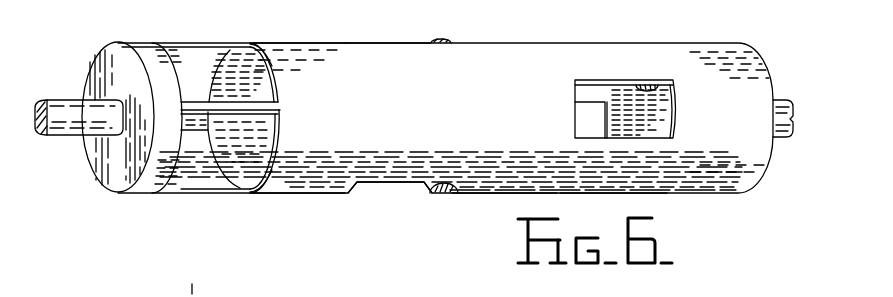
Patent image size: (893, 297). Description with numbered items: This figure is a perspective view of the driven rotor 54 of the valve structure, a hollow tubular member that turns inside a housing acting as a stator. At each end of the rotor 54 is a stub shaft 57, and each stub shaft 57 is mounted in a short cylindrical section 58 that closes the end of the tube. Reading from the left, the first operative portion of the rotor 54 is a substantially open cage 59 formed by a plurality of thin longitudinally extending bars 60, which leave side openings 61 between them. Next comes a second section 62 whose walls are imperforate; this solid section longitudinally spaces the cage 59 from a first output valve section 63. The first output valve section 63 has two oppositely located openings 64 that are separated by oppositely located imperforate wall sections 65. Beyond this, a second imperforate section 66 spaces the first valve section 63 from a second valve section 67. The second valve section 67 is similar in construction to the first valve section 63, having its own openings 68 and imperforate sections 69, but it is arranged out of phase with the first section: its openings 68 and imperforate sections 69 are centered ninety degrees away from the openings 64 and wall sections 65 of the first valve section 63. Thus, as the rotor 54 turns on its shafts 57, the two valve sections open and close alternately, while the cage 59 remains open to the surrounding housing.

The driven rotor 54 is at (504, 35).
The stub shaft 57 is at (46, 100).
The short cylindrical section 58 is at (134, 43).
The open cage 59 is at (247, 195).
The longitudinally extending bars 60 is at (187, 43).
The side openings 61 is at (251, 68).
The second section 62 is at (348, 193).
The first output valve section 63 is at (425, 193).
The openings 64 is at (438, 42).
The imperforate wall sections 65 is at (378, 57).
The second imperforate section 66 is at (558, 193).
The second valve section 67 is at (667, 193).
The openings 68 is at (588, 102).
The imperforate sections 69 is at (623, 57).